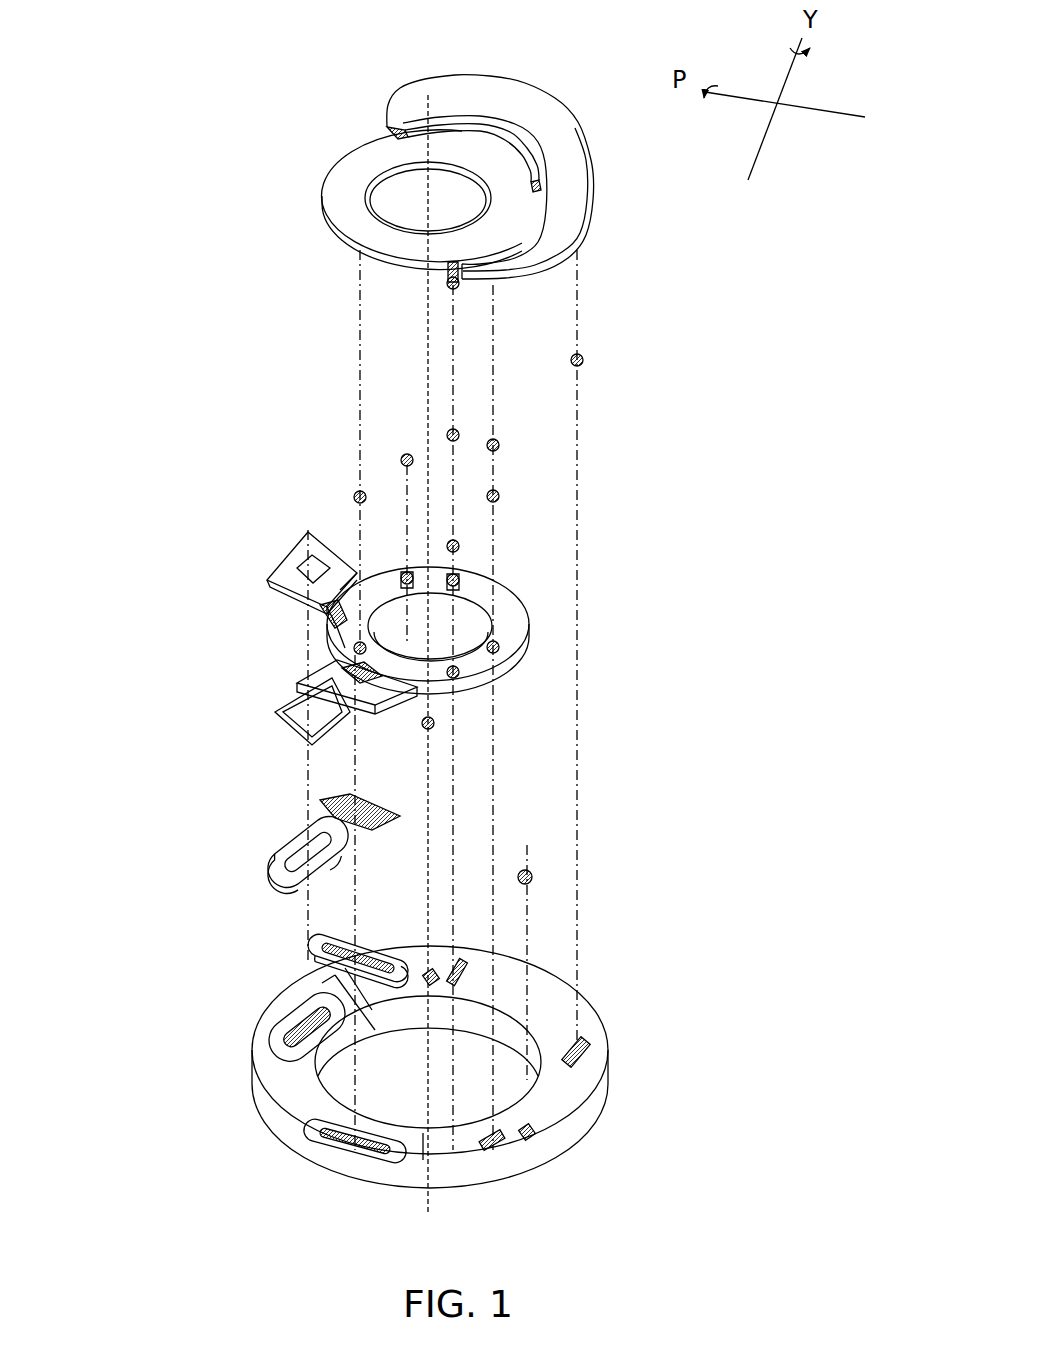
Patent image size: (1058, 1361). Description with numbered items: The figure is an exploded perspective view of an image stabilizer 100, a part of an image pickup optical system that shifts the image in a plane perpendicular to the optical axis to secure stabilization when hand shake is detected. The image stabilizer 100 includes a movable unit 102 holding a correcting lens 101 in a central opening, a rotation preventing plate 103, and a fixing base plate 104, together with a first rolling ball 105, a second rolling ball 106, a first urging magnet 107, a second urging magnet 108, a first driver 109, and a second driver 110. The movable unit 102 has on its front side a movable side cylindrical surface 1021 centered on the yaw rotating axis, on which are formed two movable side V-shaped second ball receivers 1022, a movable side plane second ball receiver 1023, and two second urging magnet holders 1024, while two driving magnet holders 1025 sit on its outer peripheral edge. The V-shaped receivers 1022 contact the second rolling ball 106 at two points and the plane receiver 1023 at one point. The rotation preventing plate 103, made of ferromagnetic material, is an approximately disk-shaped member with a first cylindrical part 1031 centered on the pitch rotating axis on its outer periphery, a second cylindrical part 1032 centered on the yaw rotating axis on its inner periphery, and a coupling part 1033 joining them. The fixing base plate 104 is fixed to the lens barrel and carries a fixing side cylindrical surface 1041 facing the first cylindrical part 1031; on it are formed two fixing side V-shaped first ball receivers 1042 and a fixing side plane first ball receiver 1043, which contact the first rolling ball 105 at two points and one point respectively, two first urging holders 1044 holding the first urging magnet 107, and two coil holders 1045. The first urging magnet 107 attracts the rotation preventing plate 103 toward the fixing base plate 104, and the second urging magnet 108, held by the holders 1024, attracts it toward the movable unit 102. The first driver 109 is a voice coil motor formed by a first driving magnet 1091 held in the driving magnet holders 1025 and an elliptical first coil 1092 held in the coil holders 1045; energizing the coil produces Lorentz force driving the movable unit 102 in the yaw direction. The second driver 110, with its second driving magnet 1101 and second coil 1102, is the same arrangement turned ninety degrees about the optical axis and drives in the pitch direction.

The image stabilizer 100 is at (147, 190).
The correcting lens 101 is at (453, 618).
The movable unit 102 is at (487, 670).
The rotation preventing plate 103 is at (561, 194).
The fixing base plate 104 is at (547, 985).
The first rolling ball 105 is at (450, 283).
The second rolling ball 106 is at (356, 497).
The first urging magnet 107 is at (433, 723).
The second urging magnet 108 is at (403, 459).
The first driver 109 is at (200, 890).
The second driver 110 is at (172, 725).
The movable side cylindrical surface 1021 is at (323, 612).
The movable side V-shaped second ball receivers 1022 is at (355, 647).
The movable side plane second ball receiver 1023 is at (457, 580).
The second urging magnet holders 1024 is at (403, 576).
The driving magnet holders 1025 is at (290, 557).
The first cylindrical part 1031 is at (530, 112).
The second cylindrical part 1032 is at (332, 177).
The coupling part 1033 is at (400, 122).
The fixing side cylindrical surface 1041 is at (513, 962).
The fixing side V-shaped first ball receivers 1042 is at (462, 972).
The fixing side plane first ball receiver 1043 is at (583, 1043).
The first urging holders 1044 is at (430, 976).
The coil holders 1045 is at (283, 1028).
The first driving magnet 1091 is at (383, 825).
The first coil 1092 is at (317, 946).
The second driving magnet 1101 is at (305, 722).
The second coil 1102 is at (296, 847).